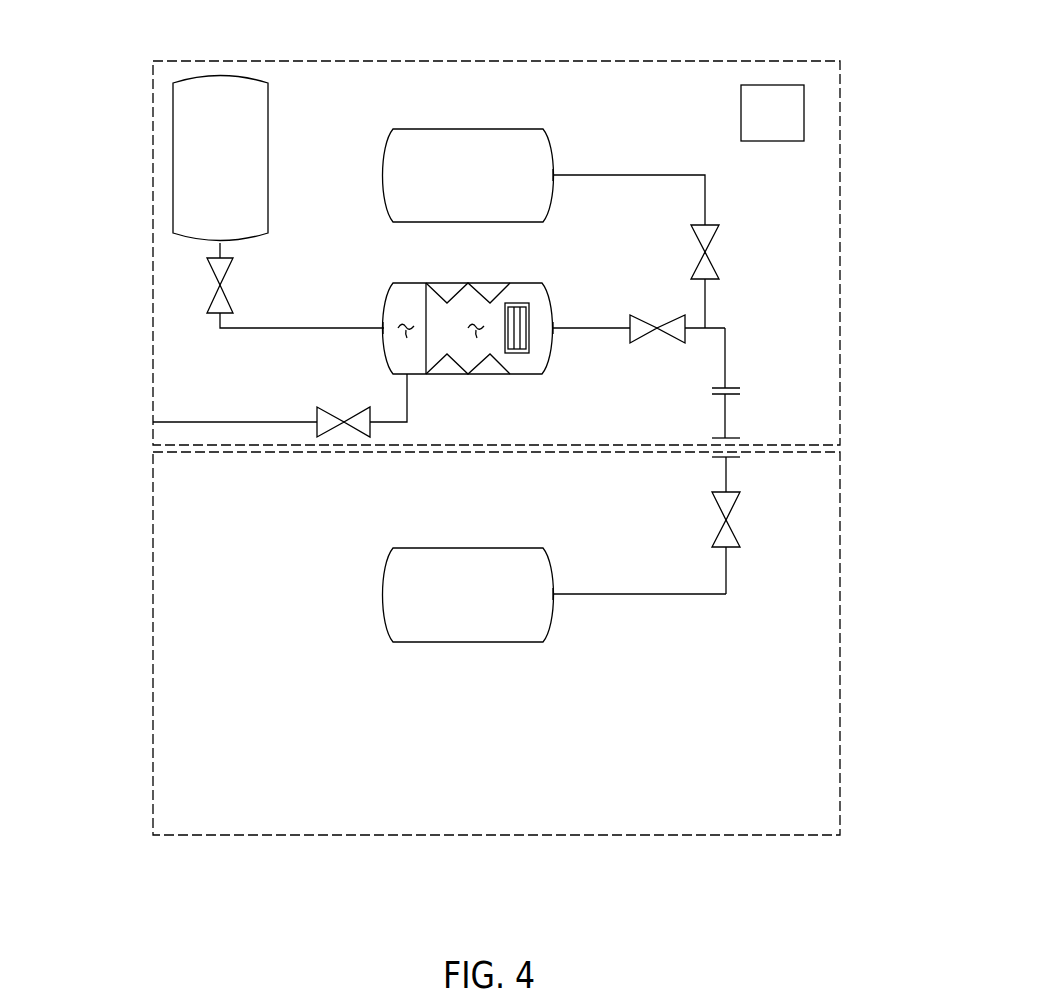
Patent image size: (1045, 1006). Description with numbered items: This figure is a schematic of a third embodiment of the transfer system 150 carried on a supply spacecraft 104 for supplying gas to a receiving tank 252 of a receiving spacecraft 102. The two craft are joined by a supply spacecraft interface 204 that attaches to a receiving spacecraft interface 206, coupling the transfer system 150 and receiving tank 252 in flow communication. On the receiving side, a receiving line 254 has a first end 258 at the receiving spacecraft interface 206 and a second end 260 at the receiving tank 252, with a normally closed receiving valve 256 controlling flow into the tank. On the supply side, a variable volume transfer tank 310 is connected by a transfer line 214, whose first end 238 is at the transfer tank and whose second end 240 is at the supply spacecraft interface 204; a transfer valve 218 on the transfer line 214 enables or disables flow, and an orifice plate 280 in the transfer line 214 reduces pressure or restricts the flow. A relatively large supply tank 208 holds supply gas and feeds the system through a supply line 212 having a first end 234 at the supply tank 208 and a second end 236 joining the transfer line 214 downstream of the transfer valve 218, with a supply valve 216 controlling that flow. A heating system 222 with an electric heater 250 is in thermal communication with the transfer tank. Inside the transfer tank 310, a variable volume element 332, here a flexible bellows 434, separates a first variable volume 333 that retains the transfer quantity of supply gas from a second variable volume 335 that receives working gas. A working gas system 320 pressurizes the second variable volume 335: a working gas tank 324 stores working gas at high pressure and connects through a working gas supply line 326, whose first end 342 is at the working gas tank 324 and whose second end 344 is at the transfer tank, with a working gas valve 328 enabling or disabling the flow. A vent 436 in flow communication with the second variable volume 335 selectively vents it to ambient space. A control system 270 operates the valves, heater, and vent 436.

The receiving spacecraft 102 is at (840, 642).
The supply spacecraft 104 is at (710, 60).
The transfer system 150 is at (127, 72).
The supply spacecraft interface 204 is at (735, 438).
The receiving spacecraft interface 206 is at (737, 458).
The supply tank 208 is at (438, 128).
The supply line 212 is at (642, 174).
The transfer line 214 is at (727, 359).
The supply valve 216 is at (710, 222).
The transfer valve 218 is at (635, 340).
The heating system 222 is at (515, 302).
The first end 234 is at (553, 172).
The second end 236 is at (706, 326).
The first end 238 is at (553, 333).
The second end 240 is at (728, 420).
The electric heater 250 is at (522, 318).
The receiving tank 252 is at (438, 643).
The receiving line 254 is at (647, 595).
The receiving valve 256 is at (731, 550).
The first end 258 is at (731, 465).
The second end 260 is at (553, 597).
The control system 270 is at (741, 112).
The orifice plate 280 is at (712, 392).
The variable volume transfer tank 310 is at (394, 282).
The working gas system 320 is at (180, 393).
The working gas tank 324 is at (221, 75).
The working gas supply line 326 is at (302, 330).
The working gas valve 328 is at (210, 318).
The variable volume element 332 is at (425, 313).
The first variable volume 333 is at (478, 335).
The second variable volume 335 is at (407, 338).
The first end 342 is at (212, 256).
The second end 344 is at (384, 328).
The flexible bellows 434 is at (446, 298).
The vent 436 is at (213, 422).